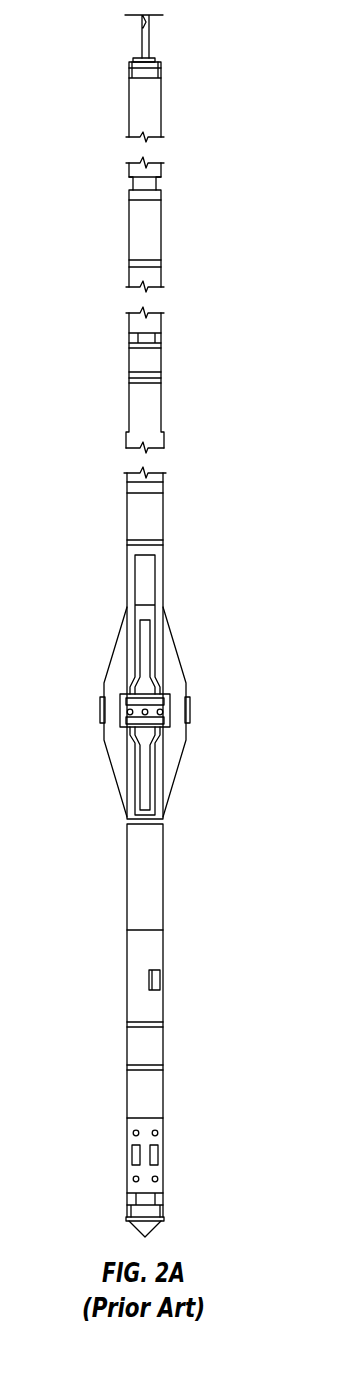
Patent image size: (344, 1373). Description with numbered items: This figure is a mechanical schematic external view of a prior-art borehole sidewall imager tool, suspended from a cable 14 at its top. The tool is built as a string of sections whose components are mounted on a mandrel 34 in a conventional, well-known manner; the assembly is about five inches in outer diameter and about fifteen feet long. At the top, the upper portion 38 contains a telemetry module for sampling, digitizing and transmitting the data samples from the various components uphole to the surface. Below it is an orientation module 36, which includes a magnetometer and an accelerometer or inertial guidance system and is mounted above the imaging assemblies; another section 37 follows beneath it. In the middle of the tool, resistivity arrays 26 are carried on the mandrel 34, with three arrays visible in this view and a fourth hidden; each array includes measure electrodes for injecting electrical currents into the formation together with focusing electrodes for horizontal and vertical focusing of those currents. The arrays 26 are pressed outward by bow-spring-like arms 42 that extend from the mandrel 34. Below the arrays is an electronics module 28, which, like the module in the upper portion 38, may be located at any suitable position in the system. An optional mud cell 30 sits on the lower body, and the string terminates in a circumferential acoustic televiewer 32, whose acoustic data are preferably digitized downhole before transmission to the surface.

The wireline cable 14 is at (149, 50).
The upper portion 38 is at (163, 97).
The orientation module 36 is at (161, 238).
The power section 37 is at (161, 358).
The mandrel 34 is at (163, 520).
The bow spring 42 is at (117, 647).
The resistivity arrays 26 is at (100, 700).
The electronics module 28 is at (163, 877).
The mud cell 30 is at (161, 978).
The circumferential acoustic televiewer 32 is at (163, 1155).